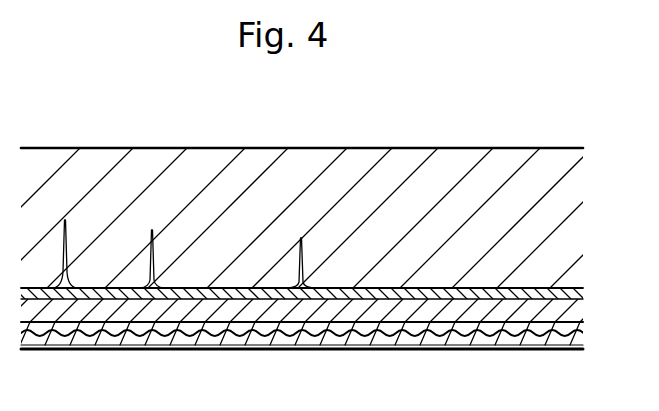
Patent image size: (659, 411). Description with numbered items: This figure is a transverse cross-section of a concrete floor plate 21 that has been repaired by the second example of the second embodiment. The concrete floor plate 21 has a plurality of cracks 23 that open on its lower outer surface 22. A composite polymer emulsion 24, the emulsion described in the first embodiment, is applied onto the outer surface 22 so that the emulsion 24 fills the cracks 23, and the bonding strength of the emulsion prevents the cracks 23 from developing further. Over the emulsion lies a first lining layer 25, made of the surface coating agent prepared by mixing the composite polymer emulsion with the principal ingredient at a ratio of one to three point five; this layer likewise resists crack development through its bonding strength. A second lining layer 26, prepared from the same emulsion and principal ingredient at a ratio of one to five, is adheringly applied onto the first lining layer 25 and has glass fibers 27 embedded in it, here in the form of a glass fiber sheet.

The concrete floor plate 21 is at (329, 218).
The lower outer surface 22 is at (299, 344).
The cracks 23 is at (225, 190).
The composite polymer emulsion 24 is at (302, 347).
The first lining layer 25 is at (301, 349).
The second lining layer 26 is at (302, 372).
The glass fibers 27 is at (308, 367).